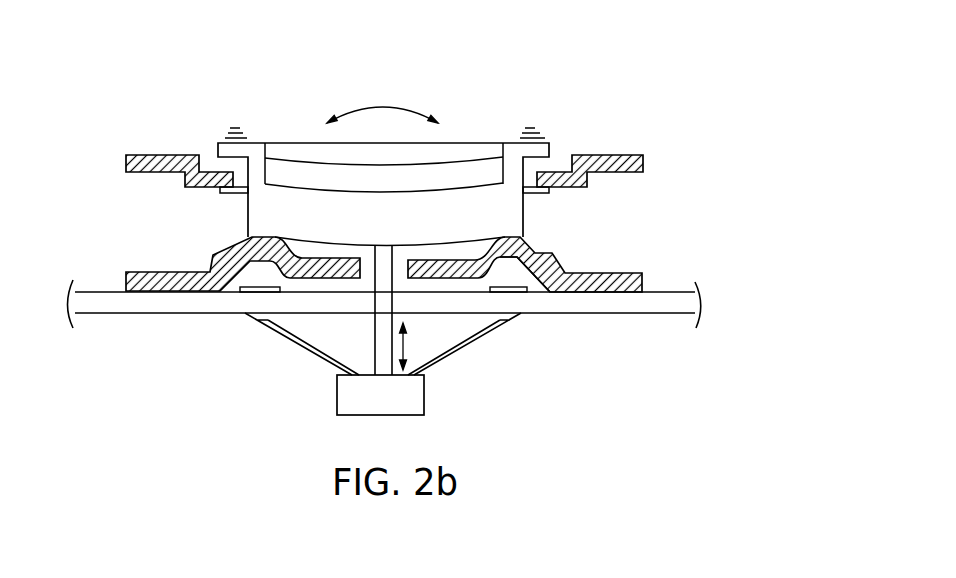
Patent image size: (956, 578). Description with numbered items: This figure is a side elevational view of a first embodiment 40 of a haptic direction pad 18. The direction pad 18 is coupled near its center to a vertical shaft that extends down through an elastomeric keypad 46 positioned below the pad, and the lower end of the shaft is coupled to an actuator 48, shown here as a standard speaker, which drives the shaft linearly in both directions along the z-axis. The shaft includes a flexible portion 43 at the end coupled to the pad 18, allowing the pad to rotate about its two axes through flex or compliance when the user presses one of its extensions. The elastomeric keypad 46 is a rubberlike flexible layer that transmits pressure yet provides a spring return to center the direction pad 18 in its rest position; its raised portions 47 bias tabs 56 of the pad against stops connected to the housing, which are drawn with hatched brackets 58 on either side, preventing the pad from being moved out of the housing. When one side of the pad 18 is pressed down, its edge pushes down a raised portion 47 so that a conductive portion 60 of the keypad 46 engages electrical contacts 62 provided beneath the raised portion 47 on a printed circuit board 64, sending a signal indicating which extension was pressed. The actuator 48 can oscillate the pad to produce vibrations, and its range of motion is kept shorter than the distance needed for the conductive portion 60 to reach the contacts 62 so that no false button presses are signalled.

The direction pad 18 is at (293, 205).
The first embodiment 40 is at (635, 110).
The flexible portion 43 is at (399, 256).
The elastomeric keypad 46 is at (570, 258).
The raised portions 47 is at (528, 240).
The actuator 48 is at (427, 395).
The tabs 56 is at (534, 193).
The bracket 58 is at (565, 186).
The conductive portion 60 is at (510, 263).
The electrical contacts 62 is at (515, 292).
The printed circuit board 64 is at (137, 294).